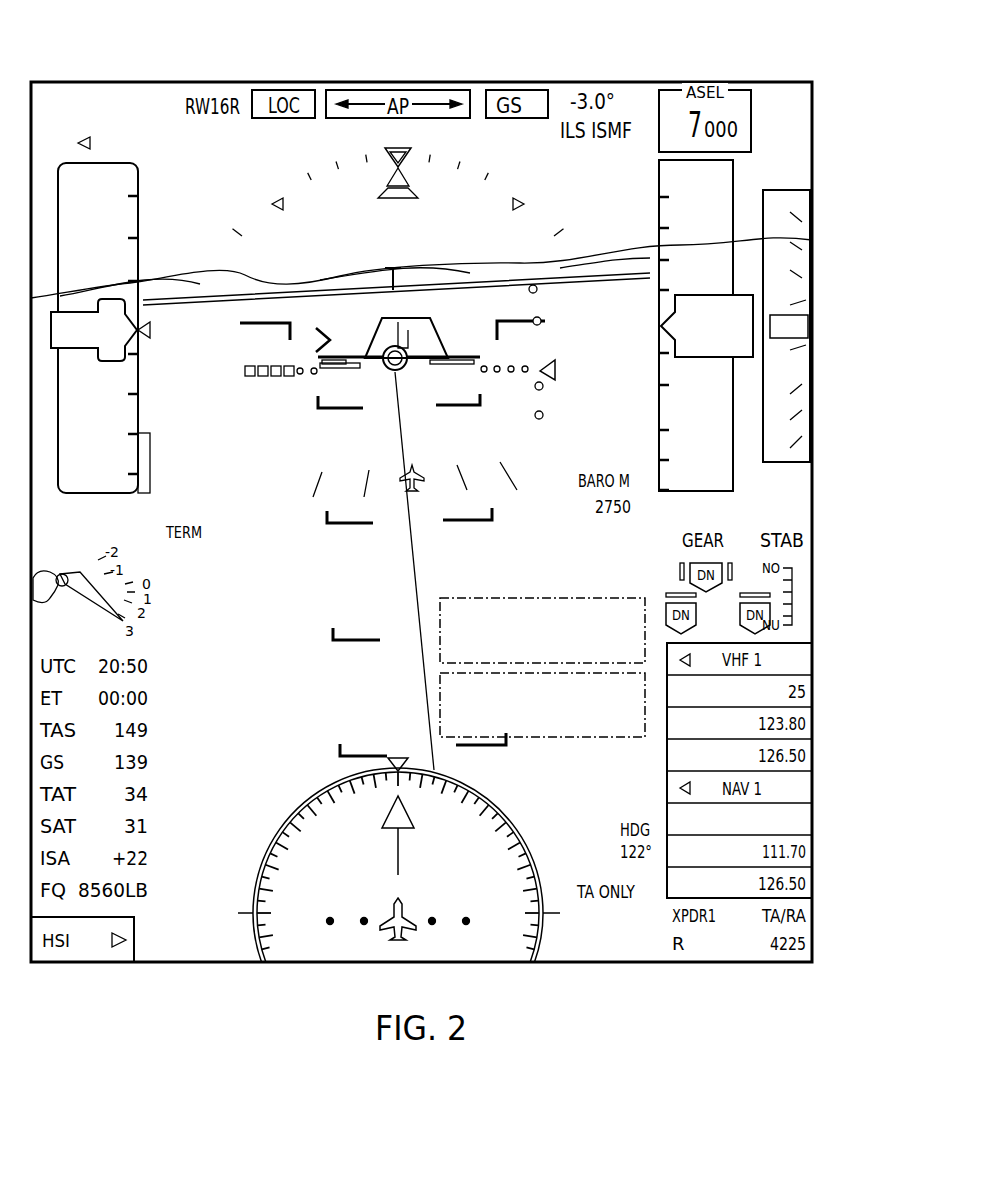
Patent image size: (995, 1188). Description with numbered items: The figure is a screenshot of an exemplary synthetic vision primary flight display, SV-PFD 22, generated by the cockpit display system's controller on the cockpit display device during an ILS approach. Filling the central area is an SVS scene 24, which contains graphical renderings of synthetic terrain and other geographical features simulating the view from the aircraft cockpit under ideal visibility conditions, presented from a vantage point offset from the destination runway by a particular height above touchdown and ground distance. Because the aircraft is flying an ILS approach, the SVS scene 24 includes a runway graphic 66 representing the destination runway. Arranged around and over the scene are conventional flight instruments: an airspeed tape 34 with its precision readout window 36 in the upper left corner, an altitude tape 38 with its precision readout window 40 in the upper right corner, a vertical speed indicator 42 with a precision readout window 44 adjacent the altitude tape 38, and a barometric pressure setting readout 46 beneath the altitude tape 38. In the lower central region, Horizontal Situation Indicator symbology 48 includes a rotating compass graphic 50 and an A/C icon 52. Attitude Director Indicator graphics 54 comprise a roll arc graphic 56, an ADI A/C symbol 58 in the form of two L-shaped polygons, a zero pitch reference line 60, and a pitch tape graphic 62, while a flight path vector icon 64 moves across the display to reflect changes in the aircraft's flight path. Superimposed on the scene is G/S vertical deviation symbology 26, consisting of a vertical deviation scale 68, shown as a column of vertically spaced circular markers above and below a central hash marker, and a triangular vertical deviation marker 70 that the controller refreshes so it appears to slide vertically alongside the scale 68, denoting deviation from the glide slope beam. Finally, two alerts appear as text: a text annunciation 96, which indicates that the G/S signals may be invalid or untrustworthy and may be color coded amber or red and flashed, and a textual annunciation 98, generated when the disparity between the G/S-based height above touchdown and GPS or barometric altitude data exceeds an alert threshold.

The SV-PFD 22 is at (421, 488).
The SVS scene 24 is at (542, 569).
The G/S vertical deviation symbology 26 is at (560, 284).
The airspeed tape 34 is at (138, 180).
The precision readout window 36 is at (78, 312).
The altitude tape 38 is at (659, 204).
The precision readout window 40 is at (675, 350).
The vertical speed indicator 42 is at (783, 192).
The precision readout window 44 is at (787, 338).
The barometric pressure setting readout 46 is at (720, 518).
The Horizontal Situation Indicator symbology 48 is at (391, 854).
The rotating compass graphic 50 is at (497, 797).
The A/C icon 52 is at (406, 918).
The Attitude Director Indicator graphics 54 is at (385, 183).
The roll arc graphic 56 is at (522, 199).
The ADI A/C symbol 58 is at (240, 324).
The zero pitch reference line 60 is at (600, 275).
The pitch tape graphic 62 is at (460, 410).
The flight path vector icon 64 is at (395, 372).
The runway graphic 66 is at (410, 332).
The vertical deviation scale 68 is at (528, 284).
The vertical deviation marker 70 is at (540, 370).
The text annunciation 96 is at (470, 598).
The textual annunciation 98 is at (574, 737).